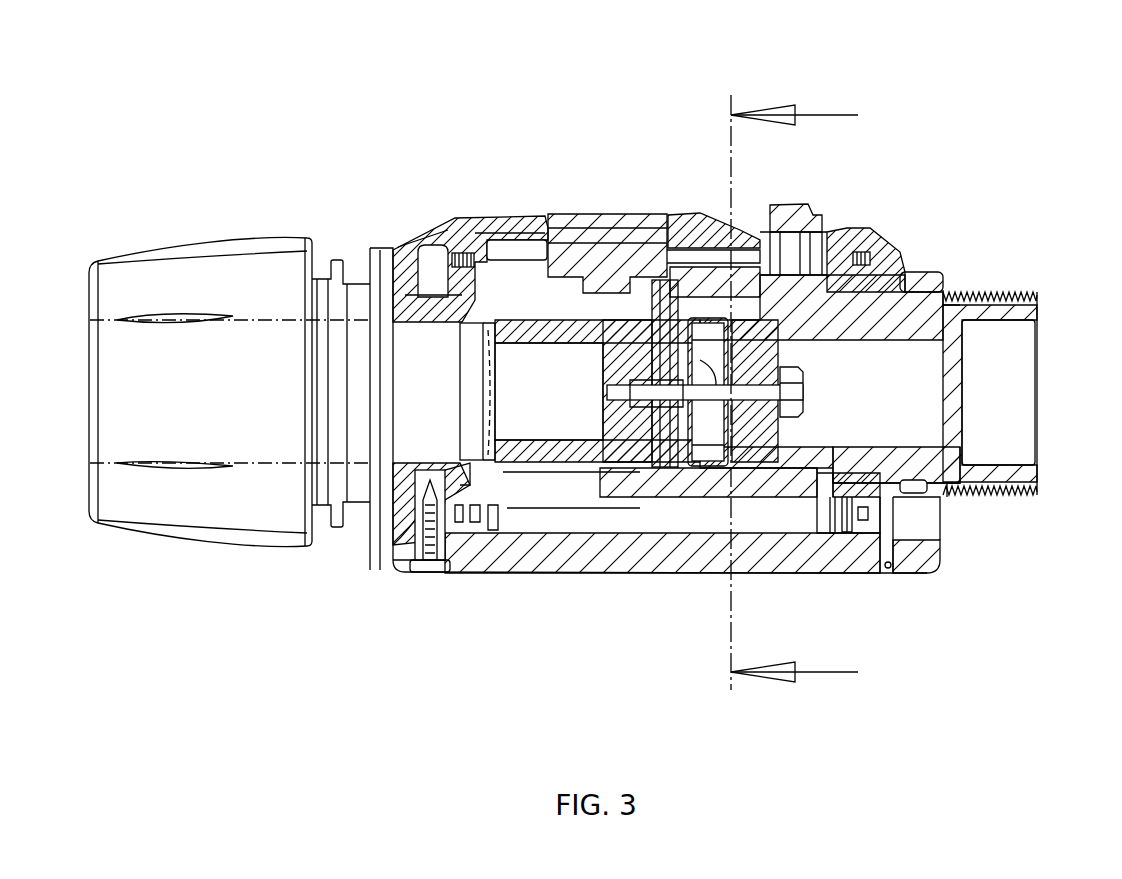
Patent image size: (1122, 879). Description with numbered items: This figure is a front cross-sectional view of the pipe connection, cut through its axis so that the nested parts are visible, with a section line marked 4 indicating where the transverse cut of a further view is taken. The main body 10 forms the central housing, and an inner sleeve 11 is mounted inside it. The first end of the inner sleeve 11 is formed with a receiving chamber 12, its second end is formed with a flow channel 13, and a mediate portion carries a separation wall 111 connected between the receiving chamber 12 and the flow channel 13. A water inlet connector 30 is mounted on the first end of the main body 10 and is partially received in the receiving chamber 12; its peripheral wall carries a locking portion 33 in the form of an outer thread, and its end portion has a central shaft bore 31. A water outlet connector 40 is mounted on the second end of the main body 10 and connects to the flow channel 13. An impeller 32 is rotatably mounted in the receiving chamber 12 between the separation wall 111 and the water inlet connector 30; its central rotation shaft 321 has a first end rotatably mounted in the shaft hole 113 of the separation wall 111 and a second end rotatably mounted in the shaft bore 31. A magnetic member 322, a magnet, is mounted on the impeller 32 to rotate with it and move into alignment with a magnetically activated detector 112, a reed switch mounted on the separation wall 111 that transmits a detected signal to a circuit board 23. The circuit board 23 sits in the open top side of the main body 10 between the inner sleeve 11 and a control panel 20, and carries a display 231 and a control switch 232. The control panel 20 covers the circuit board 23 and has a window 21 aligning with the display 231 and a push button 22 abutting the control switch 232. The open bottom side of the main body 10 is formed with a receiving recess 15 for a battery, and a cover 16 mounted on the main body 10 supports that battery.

The main body 10 is at (365, 552).
The inner sleeve 11 is at (745, 312).
The separation wall 111 is at (592, 225).
The magnetically activated detector 112 is at (663, 225).
The shaft hole 113 is at (665, 410).
The receiving chamber 12 is at (817, 473).
The flow channel 13 is at (523, 362).
The receiving recess 15 is at (545, 557).
The cover 16 is at (487, 560).
The control panel 20 is at (477, 207).
The cover cap 21 is at (557, 225).
The push button 22 is at (800, 213).
The circuit board 23 is at (693, 225).
The display 231 is at (642, 225).
The control switch 232 is at (823, 243).
The water inlet connector 30 is at (1012, 290).
The shaft bore 31 is at (913, 290).
The impeller 32 is at (722, 428).
The rotation shaft 321 is at (708, 392).
The magnetic member 322 is at (718, 420).
The locking portion 33 is at (1010, 500).
The water outlet connector 40 is at (223, 222).
The section line 4- 4 is at (794, 378).